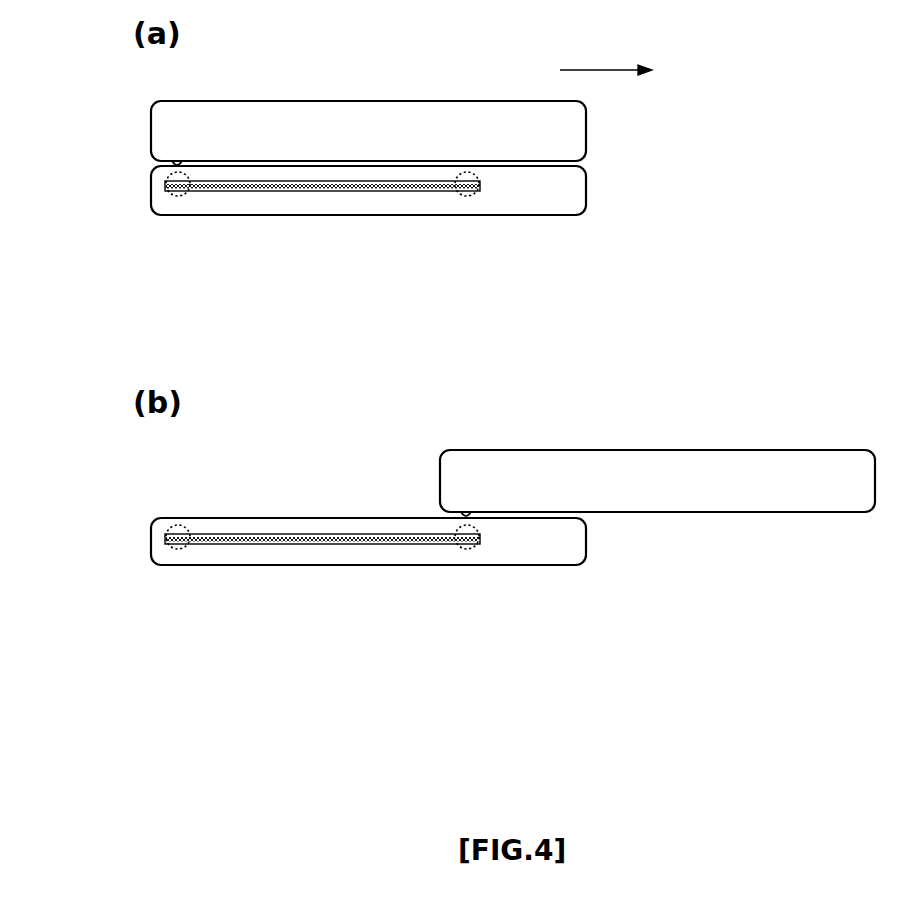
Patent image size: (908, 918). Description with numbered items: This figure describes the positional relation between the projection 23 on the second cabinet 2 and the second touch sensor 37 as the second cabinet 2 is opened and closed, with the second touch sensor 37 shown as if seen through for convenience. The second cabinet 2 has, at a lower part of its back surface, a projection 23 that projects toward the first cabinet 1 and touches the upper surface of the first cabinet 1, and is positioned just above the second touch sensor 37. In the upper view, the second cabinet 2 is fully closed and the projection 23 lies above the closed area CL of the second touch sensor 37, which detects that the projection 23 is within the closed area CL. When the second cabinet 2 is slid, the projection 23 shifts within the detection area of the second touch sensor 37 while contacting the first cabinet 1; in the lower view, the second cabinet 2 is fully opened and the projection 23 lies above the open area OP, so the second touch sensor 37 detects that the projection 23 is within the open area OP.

The first cabinet 1 is at (540, 215).
The second cabinet 2 is at (452, 101).
The projection 23 is at (176, 161).
The second touch sensor 37 is at (273, 192).
The closed area CL is at (176, 197).
The open area OP is at (466, 197).